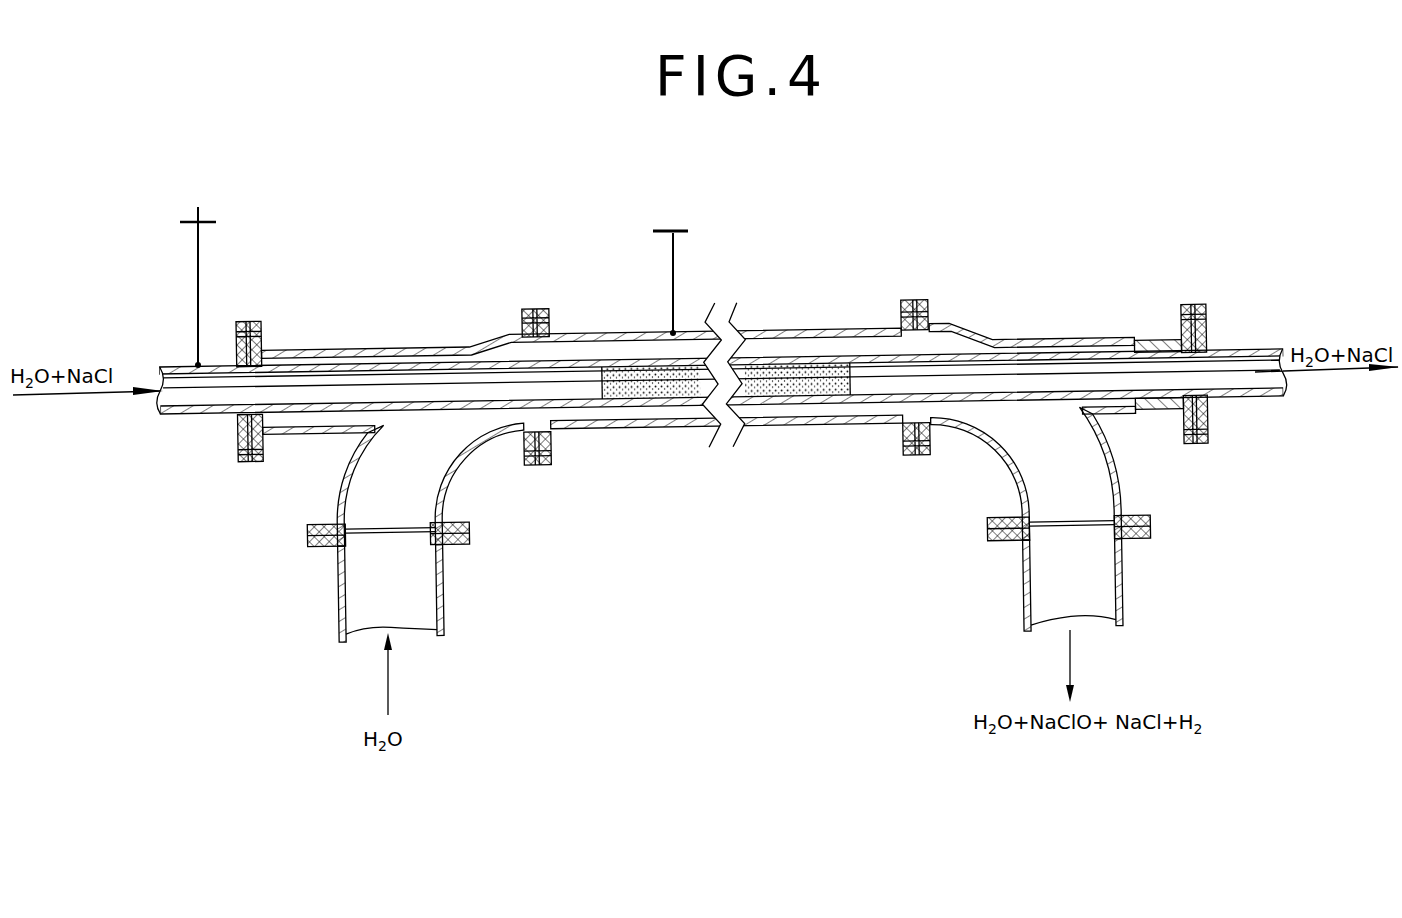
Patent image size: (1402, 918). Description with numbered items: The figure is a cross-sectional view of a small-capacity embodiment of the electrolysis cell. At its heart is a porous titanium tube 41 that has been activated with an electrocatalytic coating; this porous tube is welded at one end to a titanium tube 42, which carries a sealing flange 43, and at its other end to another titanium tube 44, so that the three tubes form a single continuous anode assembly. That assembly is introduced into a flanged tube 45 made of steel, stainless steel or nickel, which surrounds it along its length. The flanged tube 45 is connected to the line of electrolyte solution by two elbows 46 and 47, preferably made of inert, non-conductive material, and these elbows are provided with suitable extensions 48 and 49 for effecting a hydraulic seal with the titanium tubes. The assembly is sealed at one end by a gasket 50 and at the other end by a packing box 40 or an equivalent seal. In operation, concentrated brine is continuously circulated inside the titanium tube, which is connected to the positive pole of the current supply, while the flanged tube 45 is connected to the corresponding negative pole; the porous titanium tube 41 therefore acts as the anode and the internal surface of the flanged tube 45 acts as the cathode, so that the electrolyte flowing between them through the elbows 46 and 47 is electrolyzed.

The packing box 40 is at (1207, 331).
The porous titanium tube 41 is at (778, 404).
The titanium tube 42 is at (578, 406).
The sealing flange 43 is at (237, 340).
The titanium tube 44 is at (1033, 362).
The flanged tube 45 is at (649, 427).
The elbow 46 is at (458, 459).
The elbow 47 is at (1000, 472).
The extension 48 is at (401, 343).
The extension 49 is at (1118, 418).
The gasket 50 is at (249, 316).